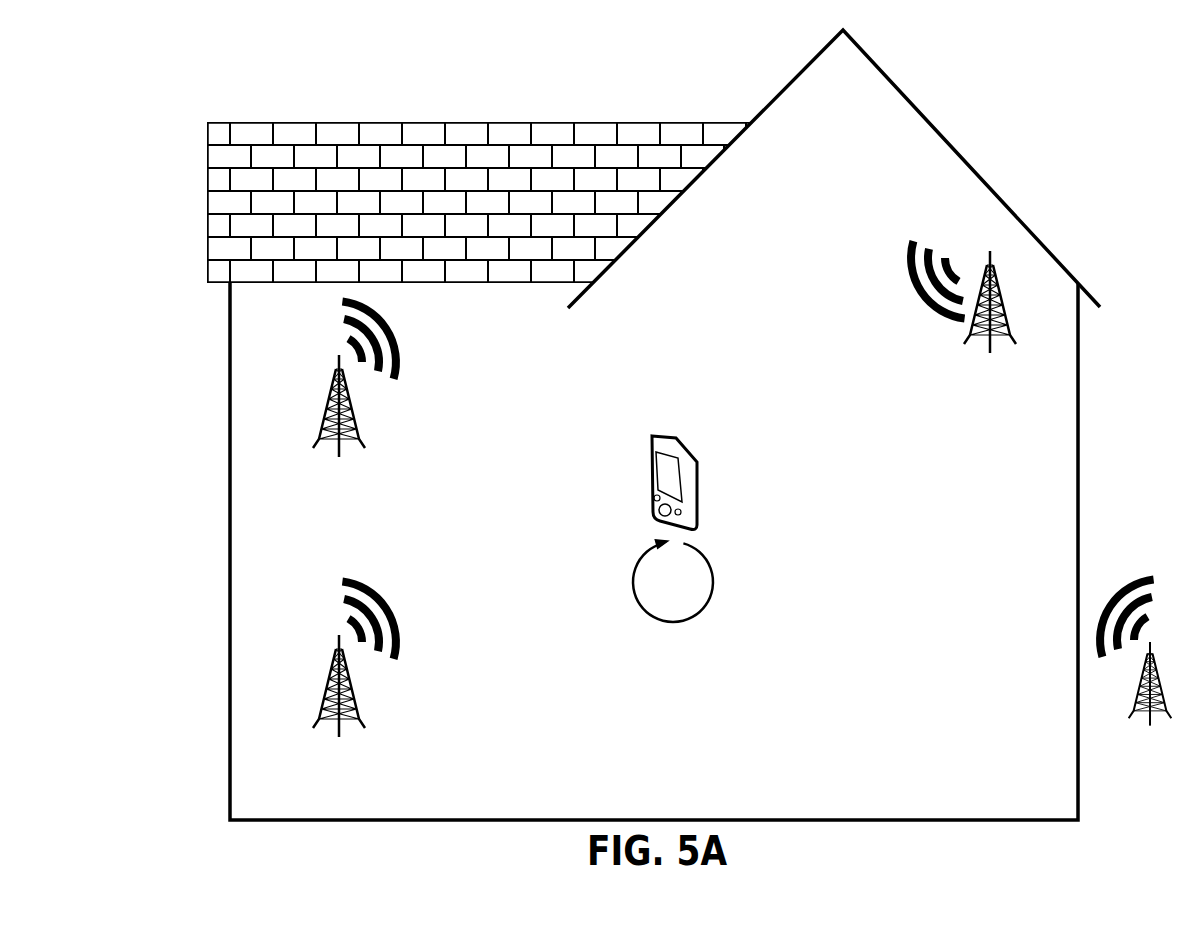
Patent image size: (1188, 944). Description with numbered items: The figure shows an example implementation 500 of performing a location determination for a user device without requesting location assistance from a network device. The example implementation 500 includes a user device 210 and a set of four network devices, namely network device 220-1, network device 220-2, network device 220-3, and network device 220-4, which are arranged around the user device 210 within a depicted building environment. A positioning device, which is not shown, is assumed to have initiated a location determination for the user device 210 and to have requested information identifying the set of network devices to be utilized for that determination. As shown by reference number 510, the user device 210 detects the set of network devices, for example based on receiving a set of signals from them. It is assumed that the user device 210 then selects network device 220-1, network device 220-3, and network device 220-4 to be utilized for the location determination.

The example implementation 500 is at (204, 58).
The user device 210 is at (673, 455).
The network device 220-1 is at (340, 407).
The network device 220-2 is at (986, 325).
The network device 220-3 is at (1144, 694).
The network device 220-4 is at (340, 688).
The reference number 510 is at (669, 632).